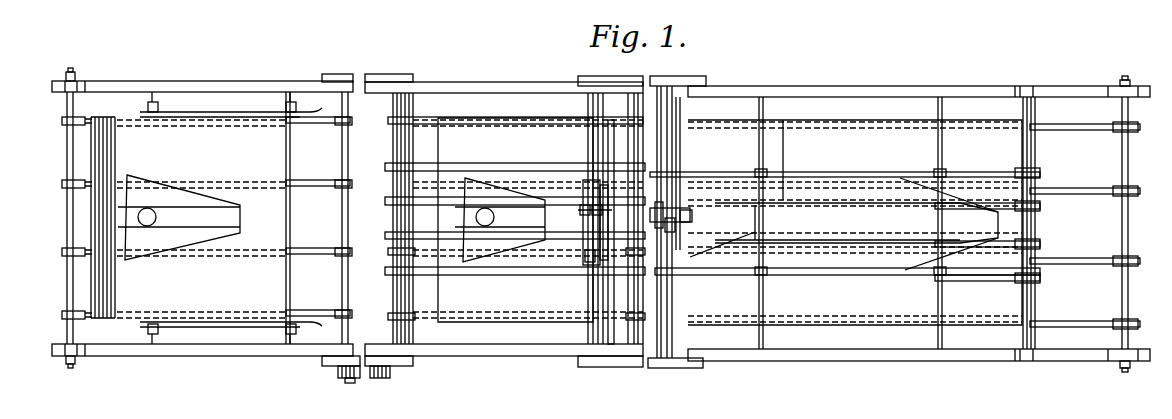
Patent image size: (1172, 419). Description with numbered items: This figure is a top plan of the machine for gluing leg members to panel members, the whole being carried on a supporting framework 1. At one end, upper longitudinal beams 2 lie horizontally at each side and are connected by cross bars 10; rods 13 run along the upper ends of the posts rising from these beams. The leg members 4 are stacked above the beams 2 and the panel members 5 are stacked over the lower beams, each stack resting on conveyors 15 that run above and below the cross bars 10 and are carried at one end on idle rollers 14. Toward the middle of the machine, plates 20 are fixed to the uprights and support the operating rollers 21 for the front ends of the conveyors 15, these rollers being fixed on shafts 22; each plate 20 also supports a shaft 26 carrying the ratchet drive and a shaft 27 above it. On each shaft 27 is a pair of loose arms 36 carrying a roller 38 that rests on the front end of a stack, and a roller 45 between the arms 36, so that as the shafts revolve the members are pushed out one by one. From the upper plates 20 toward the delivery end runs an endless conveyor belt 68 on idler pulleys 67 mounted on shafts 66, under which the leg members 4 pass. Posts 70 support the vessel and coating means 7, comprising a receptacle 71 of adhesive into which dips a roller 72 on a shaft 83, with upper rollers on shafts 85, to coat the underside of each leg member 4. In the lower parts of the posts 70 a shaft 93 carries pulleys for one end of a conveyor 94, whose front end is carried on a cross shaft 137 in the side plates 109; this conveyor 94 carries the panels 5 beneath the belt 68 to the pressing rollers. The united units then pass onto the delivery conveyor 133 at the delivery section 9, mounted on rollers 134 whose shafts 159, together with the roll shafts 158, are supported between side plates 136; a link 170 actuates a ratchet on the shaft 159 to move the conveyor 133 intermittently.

The supporting framework 1 is at (919, 77).
The upper longitudinal beams 2 is at (895, 361).
The leg members 4 is at (220, 233).
The panel members 5 is at (293, 165).
The vessel and coating means 7 is at (580, 260).
The delivery section 9 is at (192, 218).
The cross bars 10 is at (762, 335).
The rods 13 is at (905, 272).
The idle rollers 14 is at (412, 120).
The conveyors 15 is at (962, 172).
The plates 20 is at (668, 76).
The operating rollers 21 is at (676, 165).
The shafts 22 is at (665, 335).
The shaft 26 is at (676, 135).
The shaft 27 is at (662, 295).
The arms 36 is at (690, 200).
The rollers 38 is at (690, 225).
The roller 45 is at (672, 215).
The shaft 66 is at (392, 108).
The idler pulleys 67 is at (392, 165).
The endless conveyor belt 68 is at (492, 165).
The posts 70 is at (578, 76).
The receptacle 71 is at (578, 262).
The roller 72 is at (606, 268).
The shaft 83 is at (592, 335).
The shafts 85 is at (595, 280).
The shaft 93 is at (410, 300).
The conveyor 94 is at (430, 262).
The plates 109 is at (378, 74).
The delivery conveyor 133 is at (305, 250).
The rollers 134 is at (62, 258).
The side plates 136 is at (336, 74).
The cross shaft 137 is at (412, 140).
The shafts 158 is at (348, 230).
The shafts 159 is at (340, 310).
The link 170 is at (350, 383).